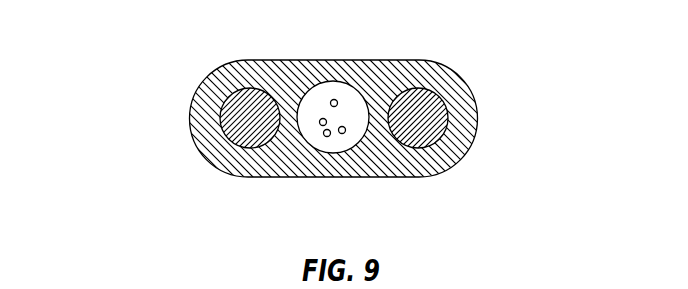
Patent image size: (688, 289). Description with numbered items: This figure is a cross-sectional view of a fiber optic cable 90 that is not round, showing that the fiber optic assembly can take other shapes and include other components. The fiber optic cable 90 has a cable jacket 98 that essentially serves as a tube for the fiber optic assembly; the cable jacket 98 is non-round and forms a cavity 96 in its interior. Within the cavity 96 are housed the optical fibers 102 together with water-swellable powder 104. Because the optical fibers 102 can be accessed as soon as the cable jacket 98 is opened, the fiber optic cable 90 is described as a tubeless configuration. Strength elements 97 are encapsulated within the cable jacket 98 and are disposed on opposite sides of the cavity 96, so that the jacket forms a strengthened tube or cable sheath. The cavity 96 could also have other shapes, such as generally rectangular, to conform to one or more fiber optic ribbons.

The fiber optic cable 90 is at (125, 72).
The cavity 96 is at (328, 83).
The strength elements 97 is at (223, 133).
The cable jacket 98 is at (236, 166).
The optical fibers 102 is at (326, 119).
The water-swellable powder 104 is at (330, 176).